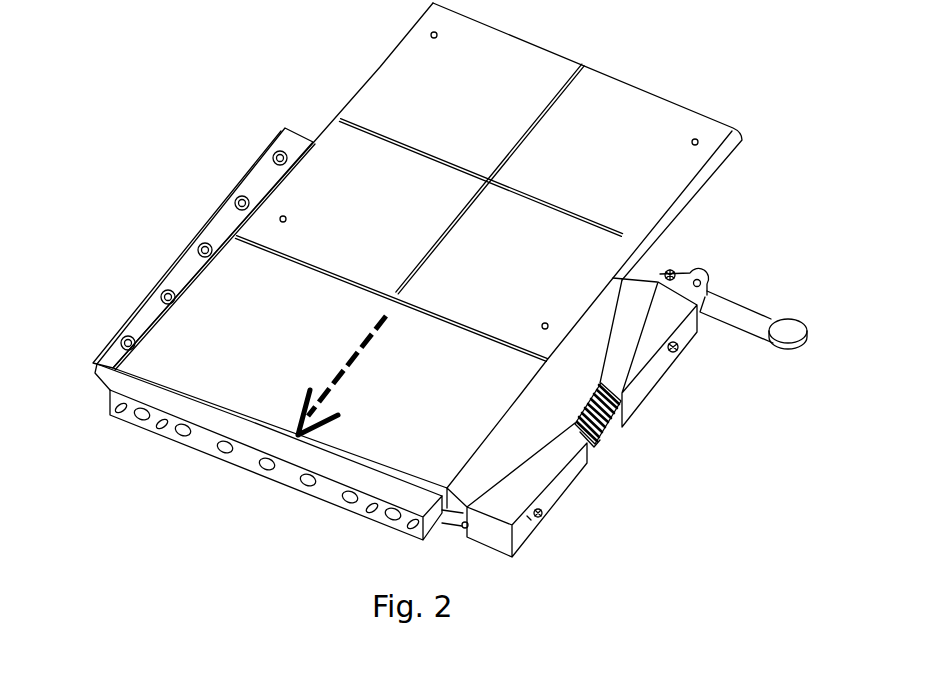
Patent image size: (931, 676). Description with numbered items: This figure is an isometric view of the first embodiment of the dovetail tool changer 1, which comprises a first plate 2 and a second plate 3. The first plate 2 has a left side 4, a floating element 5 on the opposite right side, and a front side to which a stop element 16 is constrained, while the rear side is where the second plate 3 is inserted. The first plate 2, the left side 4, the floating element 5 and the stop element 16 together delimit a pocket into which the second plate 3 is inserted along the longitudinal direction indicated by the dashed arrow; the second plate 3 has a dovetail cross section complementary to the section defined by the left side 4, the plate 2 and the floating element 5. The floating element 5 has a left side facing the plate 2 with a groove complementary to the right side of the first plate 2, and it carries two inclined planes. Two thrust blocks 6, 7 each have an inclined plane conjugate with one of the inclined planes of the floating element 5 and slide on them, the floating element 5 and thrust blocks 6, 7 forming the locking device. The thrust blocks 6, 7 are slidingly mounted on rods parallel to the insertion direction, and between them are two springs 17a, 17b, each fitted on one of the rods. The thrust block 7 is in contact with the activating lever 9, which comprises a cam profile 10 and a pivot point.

The tool changer 1 is at (193, 120).
The first plate 2 is at (247, 453).
The second plate 3 is at (610, 110).
The left side 4 is at (187, 267).
The floating element 5 is at (613, 302).
The thrust block 6 is at (557, 480).
The thrust block 7 is at (650, 372).
The activating lever 9 is at (744, 316).
The cam profile 10 is at (674, 276).
The stop element 16 is at (207, 418).
The spring 17a is at (622, 405).
The spring 17b is at (593, 447).